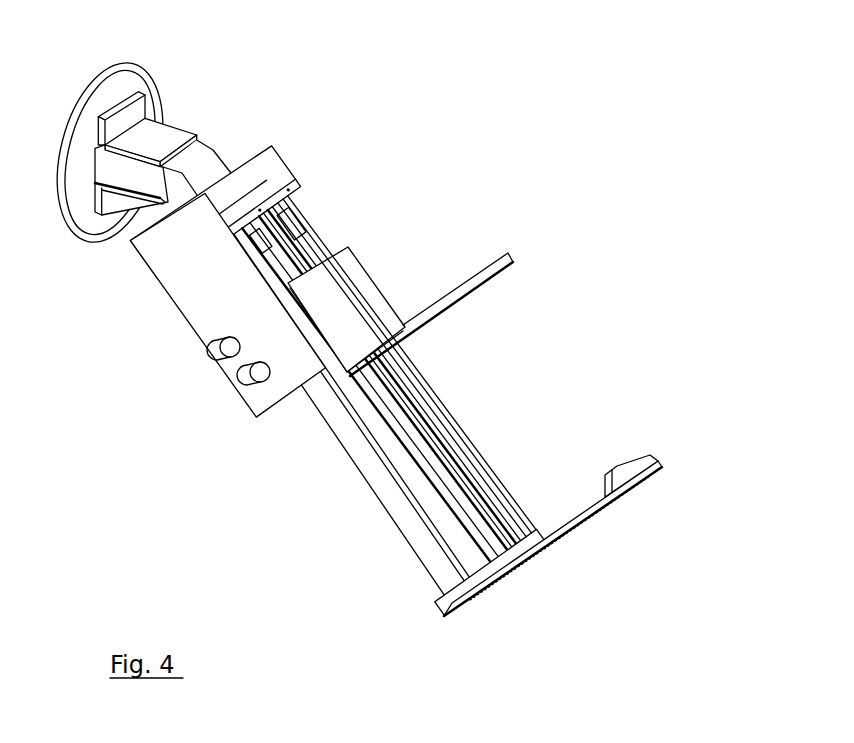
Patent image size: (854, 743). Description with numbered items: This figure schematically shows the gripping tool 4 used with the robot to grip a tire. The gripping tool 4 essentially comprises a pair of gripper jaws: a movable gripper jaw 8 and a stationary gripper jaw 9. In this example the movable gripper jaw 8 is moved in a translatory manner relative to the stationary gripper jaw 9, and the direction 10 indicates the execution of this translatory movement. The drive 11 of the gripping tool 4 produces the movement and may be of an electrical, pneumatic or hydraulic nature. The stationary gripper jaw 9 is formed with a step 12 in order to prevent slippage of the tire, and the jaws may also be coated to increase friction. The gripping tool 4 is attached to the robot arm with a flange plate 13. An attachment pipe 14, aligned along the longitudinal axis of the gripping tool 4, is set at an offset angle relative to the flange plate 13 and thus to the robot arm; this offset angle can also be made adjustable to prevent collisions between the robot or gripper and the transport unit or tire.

The gripping tool 4 is at (347, 178).
The movable gripper jaw 8 is at (487, 263).
The stationary gripper jaw 9 is at (666, 453).
The direction 10 is at (455, 410).
The drive 11 is at (184, 324).
The step 12 is at (633, 452).
The flange plate 13 is at (218, 146).
The attachment pipe 14 is at (136, 61).